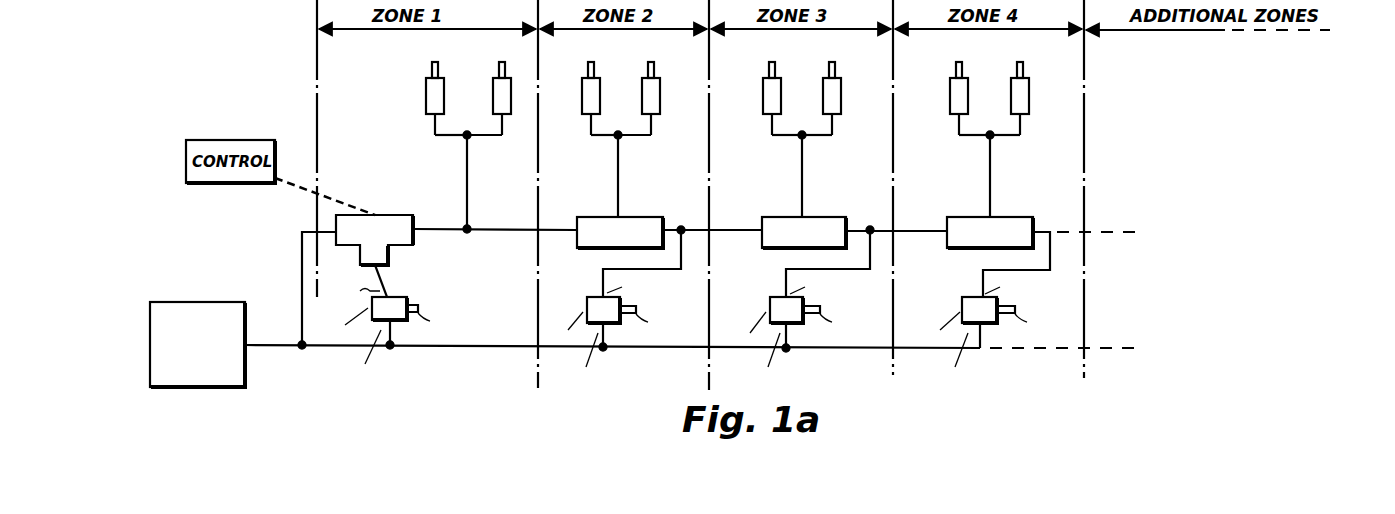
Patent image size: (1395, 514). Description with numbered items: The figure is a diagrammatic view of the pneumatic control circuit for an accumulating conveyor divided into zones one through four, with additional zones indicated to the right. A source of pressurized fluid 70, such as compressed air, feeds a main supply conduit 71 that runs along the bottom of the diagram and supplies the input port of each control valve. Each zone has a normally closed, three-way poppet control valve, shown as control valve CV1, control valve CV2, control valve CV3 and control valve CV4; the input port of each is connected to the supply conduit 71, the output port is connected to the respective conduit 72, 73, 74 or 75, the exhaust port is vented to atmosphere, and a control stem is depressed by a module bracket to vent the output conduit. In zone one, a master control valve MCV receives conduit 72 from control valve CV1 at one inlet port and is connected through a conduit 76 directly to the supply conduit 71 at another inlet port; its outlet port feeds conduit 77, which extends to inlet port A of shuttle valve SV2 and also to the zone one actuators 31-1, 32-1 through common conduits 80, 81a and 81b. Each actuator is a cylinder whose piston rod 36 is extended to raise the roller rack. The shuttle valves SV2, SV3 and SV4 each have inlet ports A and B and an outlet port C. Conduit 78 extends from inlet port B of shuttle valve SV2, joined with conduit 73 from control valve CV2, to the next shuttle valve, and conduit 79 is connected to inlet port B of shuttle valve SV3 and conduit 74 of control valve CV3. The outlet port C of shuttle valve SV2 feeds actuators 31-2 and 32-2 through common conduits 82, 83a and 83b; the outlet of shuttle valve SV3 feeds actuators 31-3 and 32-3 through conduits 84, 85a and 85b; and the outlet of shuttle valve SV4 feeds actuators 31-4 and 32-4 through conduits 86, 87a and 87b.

The source of pressurized fluid 70 is at (223, 389).
The main supply conduit 71 is at (284, 350).
The conduit 72 is at (383, 283).
The conduit 73 is at (665, 272).
The conduit 74 is at (847, 272).
The conduit 75 is at (1035, 272).
The conduit 76 is at (302, 264).
The conduit 77 is at (511, 208).
The conduit 78 is at (730, 231).
The conduit 79 is at (919, 231).
The common conduit 80 is at (470, 171).
The conduit 81a is at (435, 137).
The conduit 81b is at (480, 137).
The common conduit 82 is at (618, 184).
The conduit 83a is at (605, 140).
The conduit 83b is at (648, 138).
The common conduit 84 is at (802, 179).
The conduit 85a is at (772, 140).
The conduit 85b is at (828, 138).
The conduit 86 is at (990, 183).
The conduit 87a is at (958, 142).
The conduit 87b is at (1005, 137).
The actuator 31-1 is at (425, 95).
The actuator 32-1 is at (527, 51).
The actuator 31-2 is at (599, 75).
The actuator 32-2 is at (665, 73).
The actuator 31-3 is at (761, 78).
The actuator 32-3 is at (848, 78).
The actuator 31-4 is at (946, 78).
The actuator 32-4 is at (1053, 55).
The piston rod 36 is at (498, 71).
The master control valve MCV is at (392, 205).
The control valve CV1 is at (417, 283).
The control valve CV2 is at (573, 293).
The control valve CV3 is at (757, 294).
The control valve CV4 is at (944, 293).
The shuttle valve SV2 is at (670, 196).
The shuttle valve SV3 is at (858, 191).
The shuttle valve SV4 is at (1036, 188).